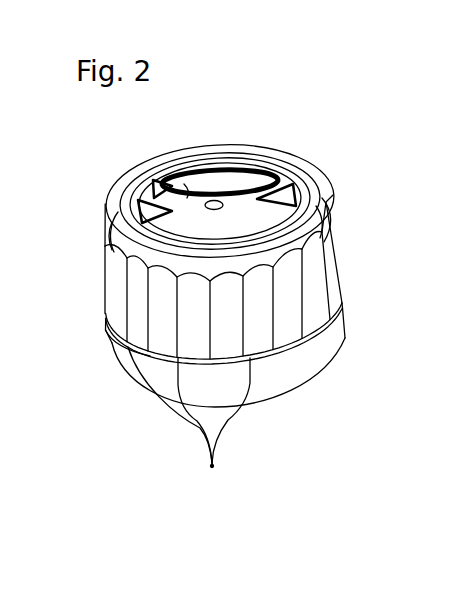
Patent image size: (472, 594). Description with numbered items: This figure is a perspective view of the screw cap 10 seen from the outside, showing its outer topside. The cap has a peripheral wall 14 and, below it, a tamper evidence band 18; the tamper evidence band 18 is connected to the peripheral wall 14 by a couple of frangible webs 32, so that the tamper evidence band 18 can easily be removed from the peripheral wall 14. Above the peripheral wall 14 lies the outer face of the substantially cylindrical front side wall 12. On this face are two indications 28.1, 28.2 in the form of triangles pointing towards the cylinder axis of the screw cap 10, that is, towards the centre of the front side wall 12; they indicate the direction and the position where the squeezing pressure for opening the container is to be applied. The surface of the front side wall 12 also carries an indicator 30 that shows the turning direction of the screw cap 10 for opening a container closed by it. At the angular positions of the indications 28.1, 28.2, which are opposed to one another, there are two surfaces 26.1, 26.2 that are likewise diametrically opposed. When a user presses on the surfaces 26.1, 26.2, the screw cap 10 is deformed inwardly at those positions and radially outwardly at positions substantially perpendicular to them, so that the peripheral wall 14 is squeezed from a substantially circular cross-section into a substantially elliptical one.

The screw cap 10 is at (227, 278).
The front side wall 12 is at (160, 180).
The peripheral wall 14 is at (341, 270).
The tamper evidence band 18 is at (320, 345).
The surface 26.1 is at (330, 205).
The surface 26.2 is at (111, 226).
The indication 28.1 is at (290, 190).
The indication 28.2 is at (172, 215).
The indicator 30 is at (195, 165).
The frangible webs 32 is at (189, 421).